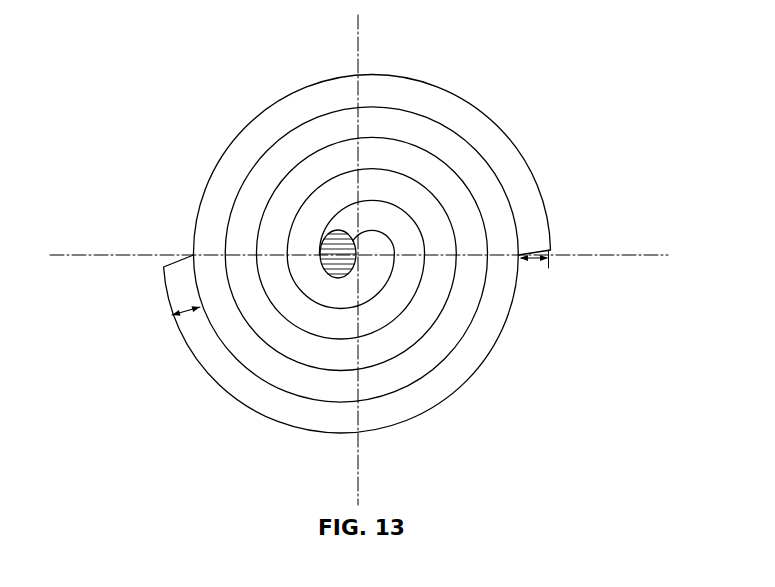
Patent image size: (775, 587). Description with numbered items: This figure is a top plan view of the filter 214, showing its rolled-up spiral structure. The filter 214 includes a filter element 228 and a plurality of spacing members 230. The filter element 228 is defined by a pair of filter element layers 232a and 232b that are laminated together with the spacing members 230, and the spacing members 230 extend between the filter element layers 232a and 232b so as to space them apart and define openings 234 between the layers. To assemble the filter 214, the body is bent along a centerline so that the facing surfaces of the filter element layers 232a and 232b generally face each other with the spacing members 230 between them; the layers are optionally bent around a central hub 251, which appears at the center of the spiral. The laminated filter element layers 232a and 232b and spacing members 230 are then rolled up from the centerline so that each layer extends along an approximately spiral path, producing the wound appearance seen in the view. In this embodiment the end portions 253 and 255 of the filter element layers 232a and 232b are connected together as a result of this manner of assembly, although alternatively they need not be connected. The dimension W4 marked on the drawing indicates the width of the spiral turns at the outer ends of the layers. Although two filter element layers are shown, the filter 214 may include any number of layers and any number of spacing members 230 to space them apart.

The filter 214 is at (182, 58).
The filter element 228 is at (194, 374).
The spacing members 230 is at (520, 177).
The filter element layer 232a is at (325, 226).
The filter element layer 232b is at (165, 298).
The openings 234 is at (209, 226).
The central hub 251 is at (335, 250).
The end portion 253 is at (305, 279).
The end portion 255 is at (342, 289).
The strip width W4 is at (538, 265).